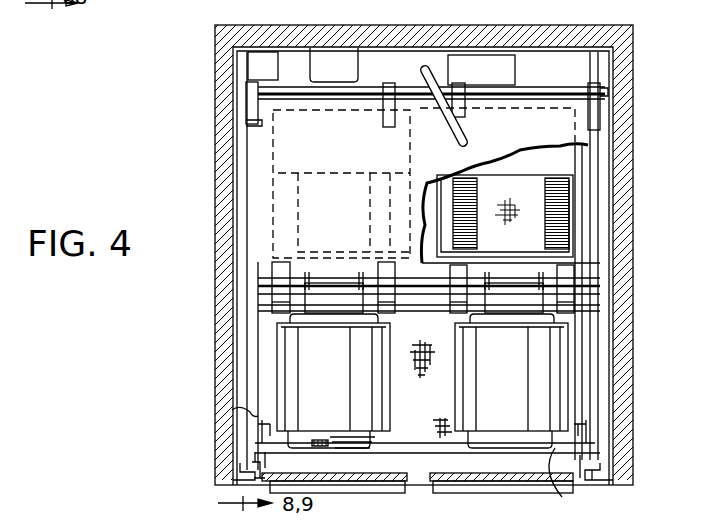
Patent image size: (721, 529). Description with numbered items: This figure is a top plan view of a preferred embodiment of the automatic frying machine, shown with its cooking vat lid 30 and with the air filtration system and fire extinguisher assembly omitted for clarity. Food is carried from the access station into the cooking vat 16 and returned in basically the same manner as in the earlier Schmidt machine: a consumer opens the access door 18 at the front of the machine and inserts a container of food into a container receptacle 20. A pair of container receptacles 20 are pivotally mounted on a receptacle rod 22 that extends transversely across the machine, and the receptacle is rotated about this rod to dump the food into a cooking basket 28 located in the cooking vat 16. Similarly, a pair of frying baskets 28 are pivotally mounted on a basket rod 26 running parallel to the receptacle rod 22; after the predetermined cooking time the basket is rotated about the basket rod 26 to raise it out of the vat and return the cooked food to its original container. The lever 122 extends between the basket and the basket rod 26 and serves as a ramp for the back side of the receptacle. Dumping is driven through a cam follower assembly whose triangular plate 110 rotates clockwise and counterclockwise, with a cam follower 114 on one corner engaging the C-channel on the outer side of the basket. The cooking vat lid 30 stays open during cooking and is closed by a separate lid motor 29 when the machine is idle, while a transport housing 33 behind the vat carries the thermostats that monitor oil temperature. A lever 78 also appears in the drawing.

The cooking vat 16 is at (580, 172).
The access door 18 is at (312, 490).
The container receptacle 20 is at (438, 440).
The receptacle rod 22 is at (603, 282).
The basket rod 26 is at (598, 306).
The cooking basket 28 is at (572, 220).
The lid motor 29 is at (252, 57).
The cooking vat lid 30 is at (256, 177).
The transport housing 33 is at (340, 53).
The operating lever 78 is at (143, 0).
The triangular plate 110 is at (265, 330).
The cam follower 114 is at (258, 434).
The lever 122 is at (282, 282).